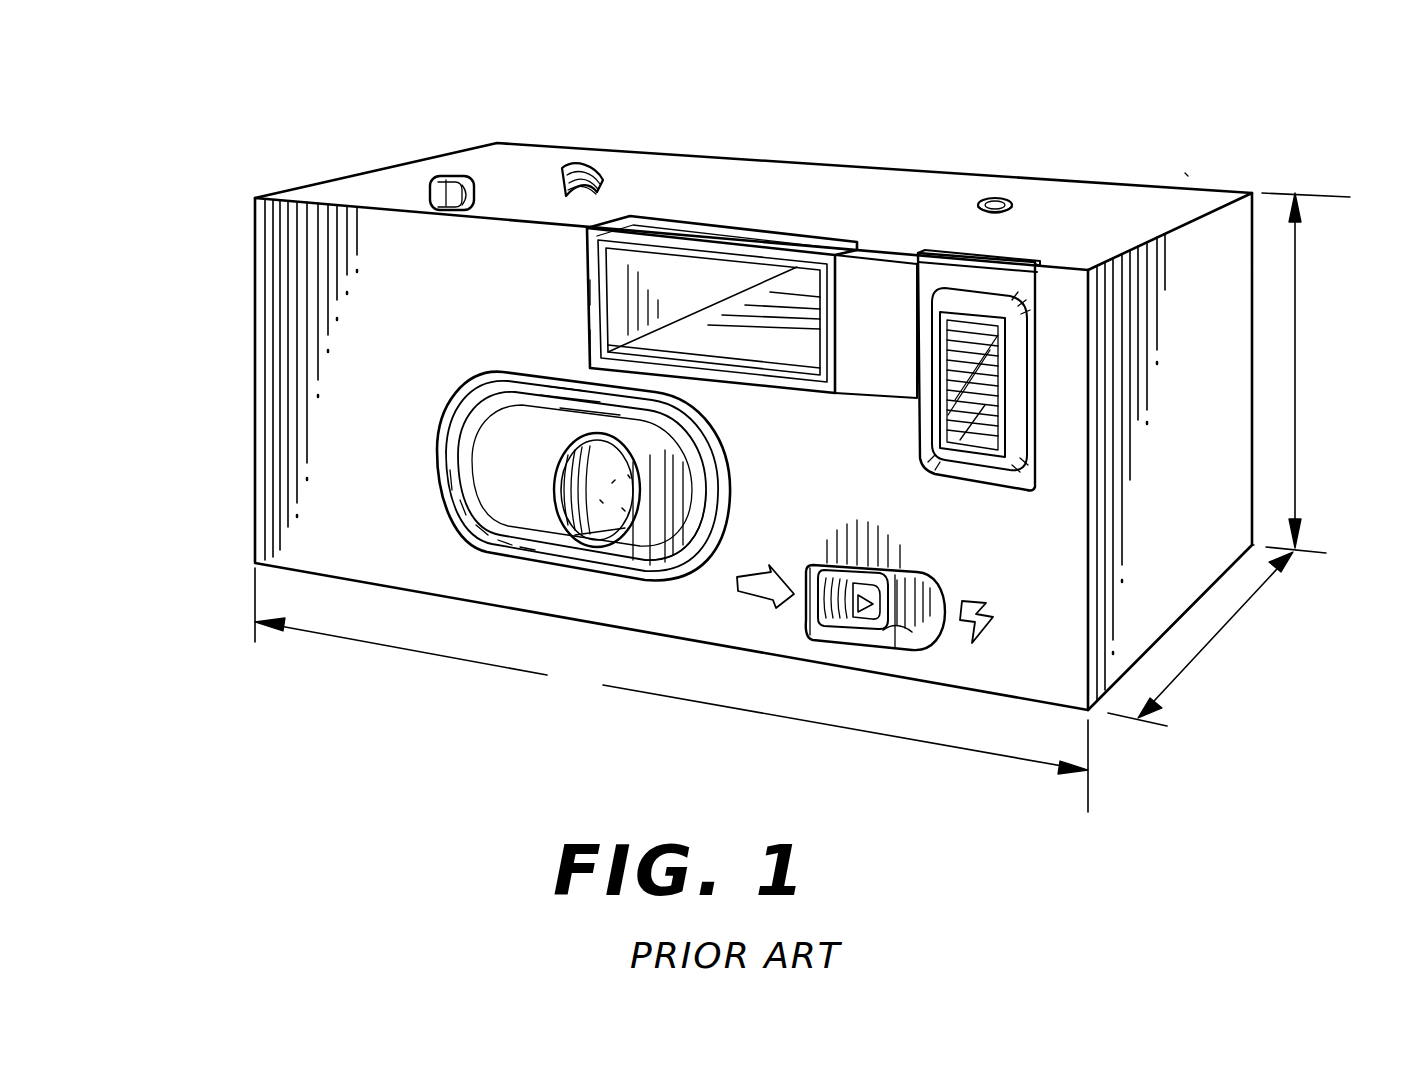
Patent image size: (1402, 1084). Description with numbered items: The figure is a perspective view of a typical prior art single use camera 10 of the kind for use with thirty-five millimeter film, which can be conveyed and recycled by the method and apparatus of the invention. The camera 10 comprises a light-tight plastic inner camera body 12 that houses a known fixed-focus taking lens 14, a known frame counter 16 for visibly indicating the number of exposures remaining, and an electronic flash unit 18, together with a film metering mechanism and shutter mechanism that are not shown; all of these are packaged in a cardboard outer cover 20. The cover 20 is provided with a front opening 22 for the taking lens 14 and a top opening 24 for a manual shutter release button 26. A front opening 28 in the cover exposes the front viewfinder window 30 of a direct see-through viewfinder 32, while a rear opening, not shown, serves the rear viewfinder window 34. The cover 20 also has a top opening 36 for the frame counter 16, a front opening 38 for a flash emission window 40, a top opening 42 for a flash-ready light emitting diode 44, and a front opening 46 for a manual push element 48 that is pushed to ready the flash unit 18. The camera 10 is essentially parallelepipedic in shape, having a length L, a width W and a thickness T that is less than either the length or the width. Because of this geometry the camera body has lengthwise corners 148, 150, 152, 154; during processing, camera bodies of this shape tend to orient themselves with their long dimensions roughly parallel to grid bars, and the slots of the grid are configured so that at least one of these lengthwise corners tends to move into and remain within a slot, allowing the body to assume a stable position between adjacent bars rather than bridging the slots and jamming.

The single use camera 10 is at (216, 391).
The inner camera body 12 is at (717, 522).
The taking lens 14 is at (597, 490).
The frame counter 16 is at (568, 168).
The electronic flash unit 18 is at (1031, 398).
The outer cover 20 is at (1160, 604).
The front opening 22 is at (455, 415).
The top opening 24 is at (474, 192).
The shutter release button 26 is at (443, 182).
The front opening 28 is at (608, 338).
The front viewfinder window 30 is at (603, 300).
The direct see-through viewfinder 32 is at (678, 272).
The rear viewfinder window 34 is at (800, 275).
The top opening 36 is at (598, 172).
The front opening 38 is at (945, 388).
The flash emission window 40 is at (945, 345).
The top opening 42 is at (996, 200).
The flash-ready light emitting diode 44 is at (990, 200).
The front opening 46 is at (897, 630).
The manual push element 48 is at (830, 592).
The lengthwise corner 148 is at (567, 617).
The lengthwise corner 150 is at (1252, 545).
The lengthwise corner 152 is at (1185, 173).
The lengthwise corner 154 is at (886, 255).
The length L is at (671, 690).
The width W is at (1297, 375).
The thickness T is at (1190, 665).